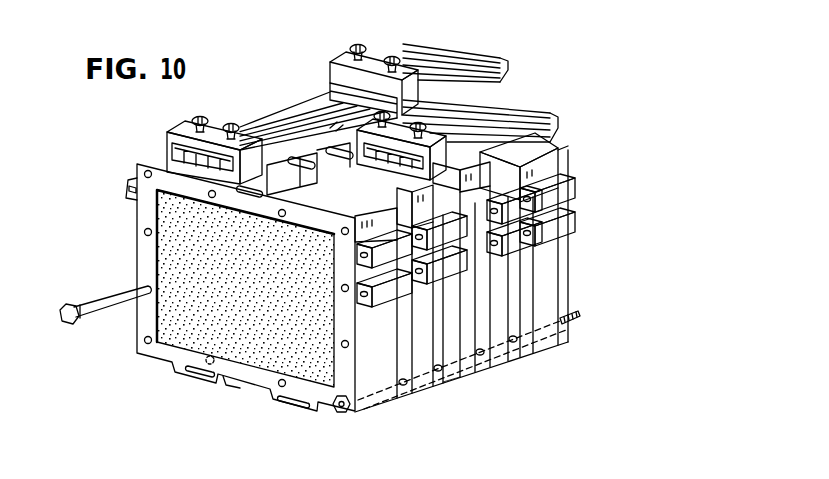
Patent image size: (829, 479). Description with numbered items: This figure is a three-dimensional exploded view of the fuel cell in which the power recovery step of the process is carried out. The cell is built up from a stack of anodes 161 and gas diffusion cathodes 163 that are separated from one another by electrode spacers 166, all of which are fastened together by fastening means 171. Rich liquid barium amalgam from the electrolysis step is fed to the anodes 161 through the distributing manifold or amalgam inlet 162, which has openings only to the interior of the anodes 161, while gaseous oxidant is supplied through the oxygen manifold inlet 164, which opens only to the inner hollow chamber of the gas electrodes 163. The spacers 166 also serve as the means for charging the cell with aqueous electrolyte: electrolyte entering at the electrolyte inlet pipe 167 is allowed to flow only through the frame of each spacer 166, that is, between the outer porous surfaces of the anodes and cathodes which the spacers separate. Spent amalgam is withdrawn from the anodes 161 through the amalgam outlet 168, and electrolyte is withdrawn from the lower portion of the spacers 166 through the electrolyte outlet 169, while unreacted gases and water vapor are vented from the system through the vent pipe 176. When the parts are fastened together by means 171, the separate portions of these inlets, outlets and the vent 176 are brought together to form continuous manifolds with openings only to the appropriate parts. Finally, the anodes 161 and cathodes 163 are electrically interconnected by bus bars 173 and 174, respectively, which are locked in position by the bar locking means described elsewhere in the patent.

The anodes 161 is at (359, 416).
The distributing manifold 162 is at (612, 204).
The gas diffusion cathodes 163 is at (458, 372).
The manifold inlet 164 is at (560, 228).
The electrode spacers 166 is at (420, 388).
The electrolyte inlet pipe 167 is at (127, 183).
The amalgam outlet 168 is at (197, 380).
The electrolyte outlet 169 is at (286, 409).
The fastening means 171 is at (122, 301).
The bus bar 173 is at (497, 62).
The bus bar 174 is at (530, 112).
The vent pipe 176 is at (337, 137).